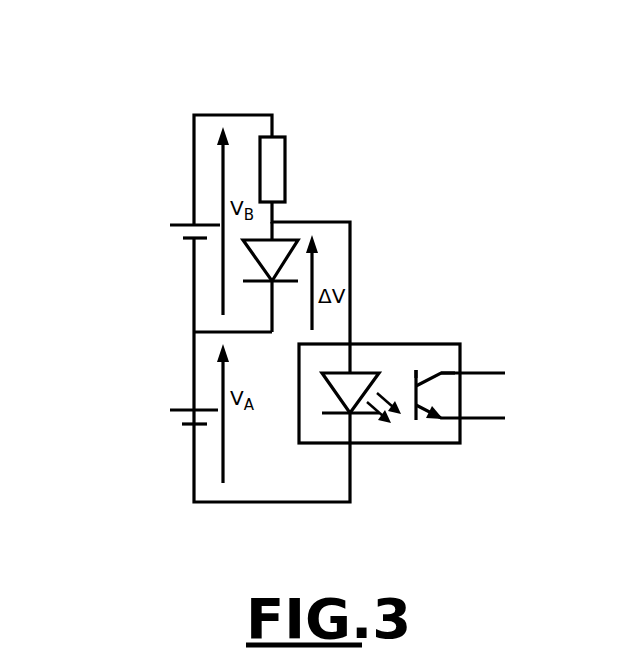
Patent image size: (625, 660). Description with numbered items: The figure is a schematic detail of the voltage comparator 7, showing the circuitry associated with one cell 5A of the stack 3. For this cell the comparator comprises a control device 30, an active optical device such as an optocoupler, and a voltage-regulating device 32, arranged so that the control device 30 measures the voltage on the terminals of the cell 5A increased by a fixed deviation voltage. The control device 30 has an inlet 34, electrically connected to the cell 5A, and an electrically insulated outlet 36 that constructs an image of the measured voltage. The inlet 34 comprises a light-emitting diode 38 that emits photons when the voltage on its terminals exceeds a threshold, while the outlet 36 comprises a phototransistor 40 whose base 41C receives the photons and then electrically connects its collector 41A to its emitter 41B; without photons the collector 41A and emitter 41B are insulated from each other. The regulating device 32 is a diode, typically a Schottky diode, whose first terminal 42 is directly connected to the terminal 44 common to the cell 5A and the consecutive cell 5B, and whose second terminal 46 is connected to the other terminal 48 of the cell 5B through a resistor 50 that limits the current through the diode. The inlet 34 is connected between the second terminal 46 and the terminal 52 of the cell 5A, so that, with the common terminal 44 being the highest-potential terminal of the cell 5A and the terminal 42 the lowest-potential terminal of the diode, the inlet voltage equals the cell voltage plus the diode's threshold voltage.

The stack 3 is at (131, 263).
The cell 5A is at (146, 413).
The consecutive cell 5B is at (145, 228).
The voltage comparator 7 is at (485, 137).
The control device 30 is at (380, 376).
The voltage-regulating device 32 is at (295, 226).
The inlet 34 is at (364, 428).
The outlet 36 is at (435, 432).
The light-emitting diode 38 is at (338, 395).
The phototransistor 40 is at (435, 355).
The collector 41A is at (497, 367).
The emitter 41B is at (495, 421).
The base 41C is at (414, 380).
The first terminal 42 is at (272, 332).
The common terminal 44 is at (194, 332).
The second terminal 46 is at (275, 220).
The terminal 48 is at (194, 115).
The resistor 50 is at (285, 155).
The terminal 52 is at (194, 502).